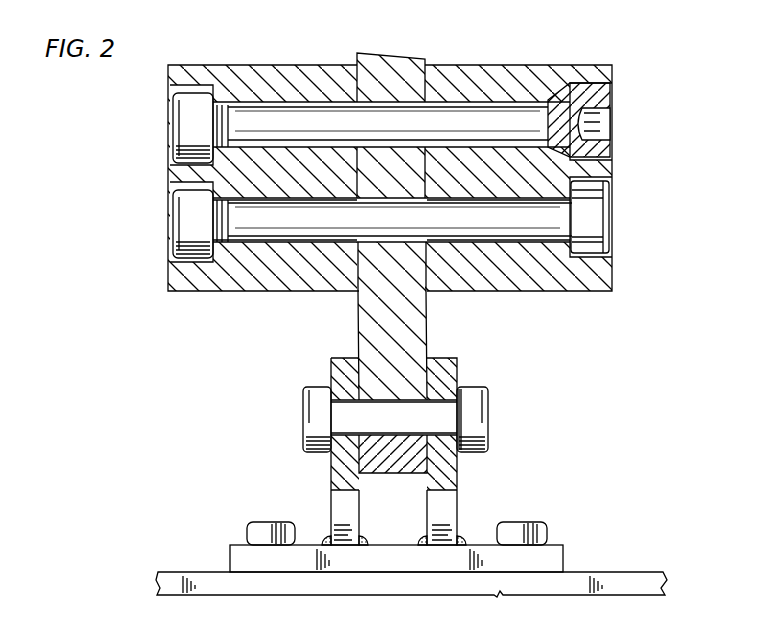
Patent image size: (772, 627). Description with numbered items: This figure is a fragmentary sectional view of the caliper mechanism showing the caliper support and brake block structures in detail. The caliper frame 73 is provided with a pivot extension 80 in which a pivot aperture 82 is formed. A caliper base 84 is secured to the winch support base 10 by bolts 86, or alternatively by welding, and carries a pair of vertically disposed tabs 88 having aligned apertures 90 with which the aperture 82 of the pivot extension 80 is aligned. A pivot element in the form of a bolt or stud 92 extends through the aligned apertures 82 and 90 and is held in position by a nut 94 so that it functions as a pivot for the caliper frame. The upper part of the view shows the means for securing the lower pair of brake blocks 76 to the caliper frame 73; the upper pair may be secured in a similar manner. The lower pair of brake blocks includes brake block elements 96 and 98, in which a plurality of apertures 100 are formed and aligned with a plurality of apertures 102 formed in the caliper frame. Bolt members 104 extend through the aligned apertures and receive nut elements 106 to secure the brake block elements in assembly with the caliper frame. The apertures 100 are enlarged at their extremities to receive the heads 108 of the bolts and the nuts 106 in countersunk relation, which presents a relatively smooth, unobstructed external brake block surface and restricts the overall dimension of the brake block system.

The winch support base 10 is at (165, 574).
The caliper frame 73 is at (357, 313).
The lower pair of brake blocks 76 is at (193, 330).
The pivot extension 80 is at (430, 340).
The pivot aperture 82 is at (401, 430).
The caliper base 84 is at (560, 556).
The bolts 86 is at (243, 524).
The vertically disposed tabs 88 is at (334, 479).
The aligned apertures 90 is at (303, 428).
The bolt or stud 92 is at (433, 413).
The nut 94 is at (488, 383).
The brake block element 96 is at (174, 271).
The brake block element 98 is at (613, 278).
The apertures 100 is at (312, 240).
The apertures 102 is at (412, 235).
The clamp bolts 104 is at (491, 116).
The nut elements 106 is at (173, 136).
The heads of the bolts 108 is at (613, 98).